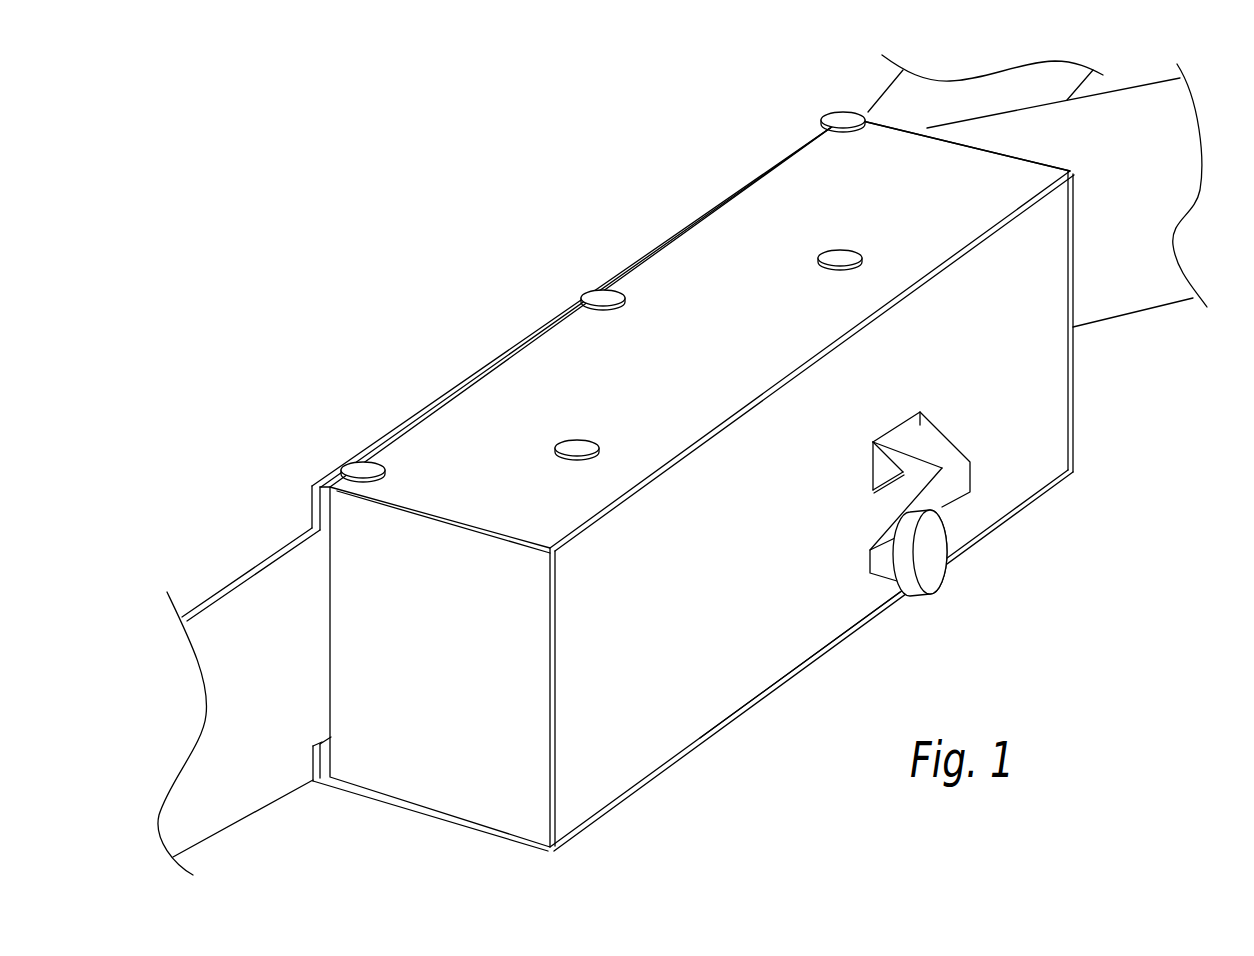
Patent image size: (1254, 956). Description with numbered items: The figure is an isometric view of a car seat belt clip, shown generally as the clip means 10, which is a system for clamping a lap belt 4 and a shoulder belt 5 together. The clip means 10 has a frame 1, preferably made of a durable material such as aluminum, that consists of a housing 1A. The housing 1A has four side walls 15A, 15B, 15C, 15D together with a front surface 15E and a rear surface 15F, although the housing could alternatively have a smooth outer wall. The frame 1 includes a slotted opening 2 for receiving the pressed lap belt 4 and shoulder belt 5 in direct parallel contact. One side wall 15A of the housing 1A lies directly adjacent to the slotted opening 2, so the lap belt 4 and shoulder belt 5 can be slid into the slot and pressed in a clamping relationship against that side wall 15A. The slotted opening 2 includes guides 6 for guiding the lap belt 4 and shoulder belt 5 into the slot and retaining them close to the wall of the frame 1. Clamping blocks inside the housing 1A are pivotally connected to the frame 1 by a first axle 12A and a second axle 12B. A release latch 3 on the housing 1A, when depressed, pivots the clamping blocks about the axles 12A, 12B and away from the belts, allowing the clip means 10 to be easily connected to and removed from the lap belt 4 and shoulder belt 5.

The clip means 10 is at (516, 167).
The frame 1 is at (617, 802).
The housing 1A is at (773, 635).
The slotted opening 2 is at (318, 506).
The release latch 3 is at (932, 553).
The lap belt 4 is at (910, 96).
The shoulder belt 5 is at (1145, 275).
The guides 6 is at (843, 118).
The first axle 12A is at (842, 250).
The second axle 12B is at (577, 440).
The side wall 15A is at (420, 400).
The side wall 15B is at (680, 321).
The side wall 15C is at (750, 543).
The side wall 15D is at (1023, 513).
The front surface 15E is at (1047, 156).
The rear surface 15F is at (434, 689).